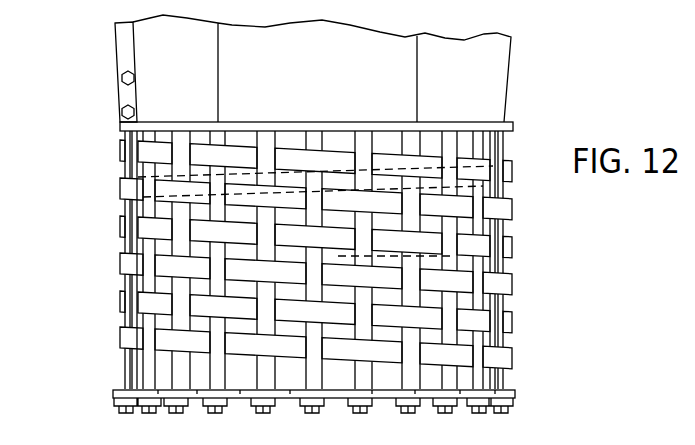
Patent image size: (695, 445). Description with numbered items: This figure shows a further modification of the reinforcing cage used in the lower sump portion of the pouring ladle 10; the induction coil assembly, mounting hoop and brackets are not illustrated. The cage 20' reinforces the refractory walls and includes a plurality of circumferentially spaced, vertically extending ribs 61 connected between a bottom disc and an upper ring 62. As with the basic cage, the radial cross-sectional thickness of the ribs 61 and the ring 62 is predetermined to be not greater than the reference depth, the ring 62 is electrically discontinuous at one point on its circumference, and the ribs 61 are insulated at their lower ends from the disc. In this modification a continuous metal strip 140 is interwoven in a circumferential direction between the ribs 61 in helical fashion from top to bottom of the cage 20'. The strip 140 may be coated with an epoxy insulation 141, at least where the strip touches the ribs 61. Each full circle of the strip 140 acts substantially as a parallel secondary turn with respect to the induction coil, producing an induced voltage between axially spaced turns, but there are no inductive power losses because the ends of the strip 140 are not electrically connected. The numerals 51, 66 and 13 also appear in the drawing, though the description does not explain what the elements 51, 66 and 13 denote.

The pouring ladle 10 is at (507, 83).
The mounting strip 51 is at (123, 42).
The bolts 66 is at (118, 103).
The upper ring 62 is at (327, 127).
The cage 20' is at (349, 260).
The epoxy insulation 141 is at (513, 320).
The continuous metal strip 140 is at (512, 354).
The ribs 61 is at (410, 380).
The rods 13 is at (453, 250).